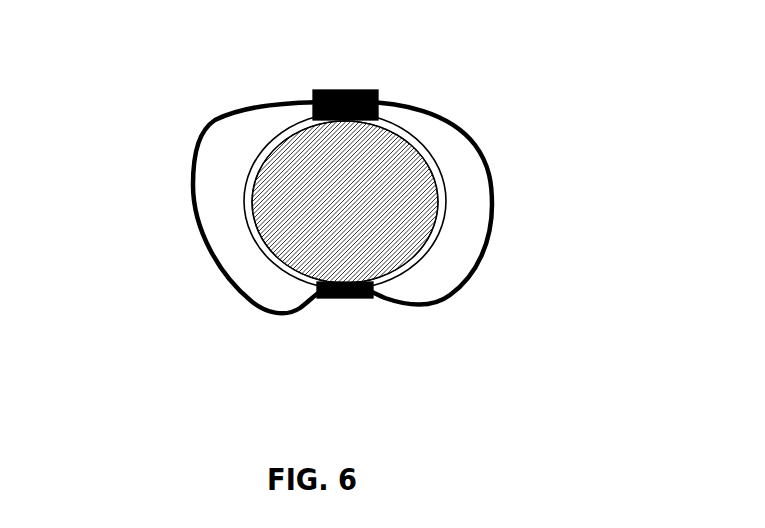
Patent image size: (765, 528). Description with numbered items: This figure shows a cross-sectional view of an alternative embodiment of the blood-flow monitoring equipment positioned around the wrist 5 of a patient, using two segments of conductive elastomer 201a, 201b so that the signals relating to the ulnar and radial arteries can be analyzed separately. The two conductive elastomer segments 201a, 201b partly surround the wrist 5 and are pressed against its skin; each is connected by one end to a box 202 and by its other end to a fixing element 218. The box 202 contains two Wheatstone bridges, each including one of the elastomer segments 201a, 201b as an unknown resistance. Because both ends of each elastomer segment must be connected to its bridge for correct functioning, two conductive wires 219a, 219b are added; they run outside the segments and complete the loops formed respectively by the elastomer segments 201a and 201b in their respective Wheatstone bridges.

The wrist 5 is at (312, 235).
The conductive elastomer segment 201a is at (449, 200).
The conductive elastomer segment 201b is at (243, 198).
The box 202 is at (350, 90).
The fixing element 218 is at (350, 298).
The conductive wire 219a is at (493, 203).
The conductive wire 219b is at (212, 122).